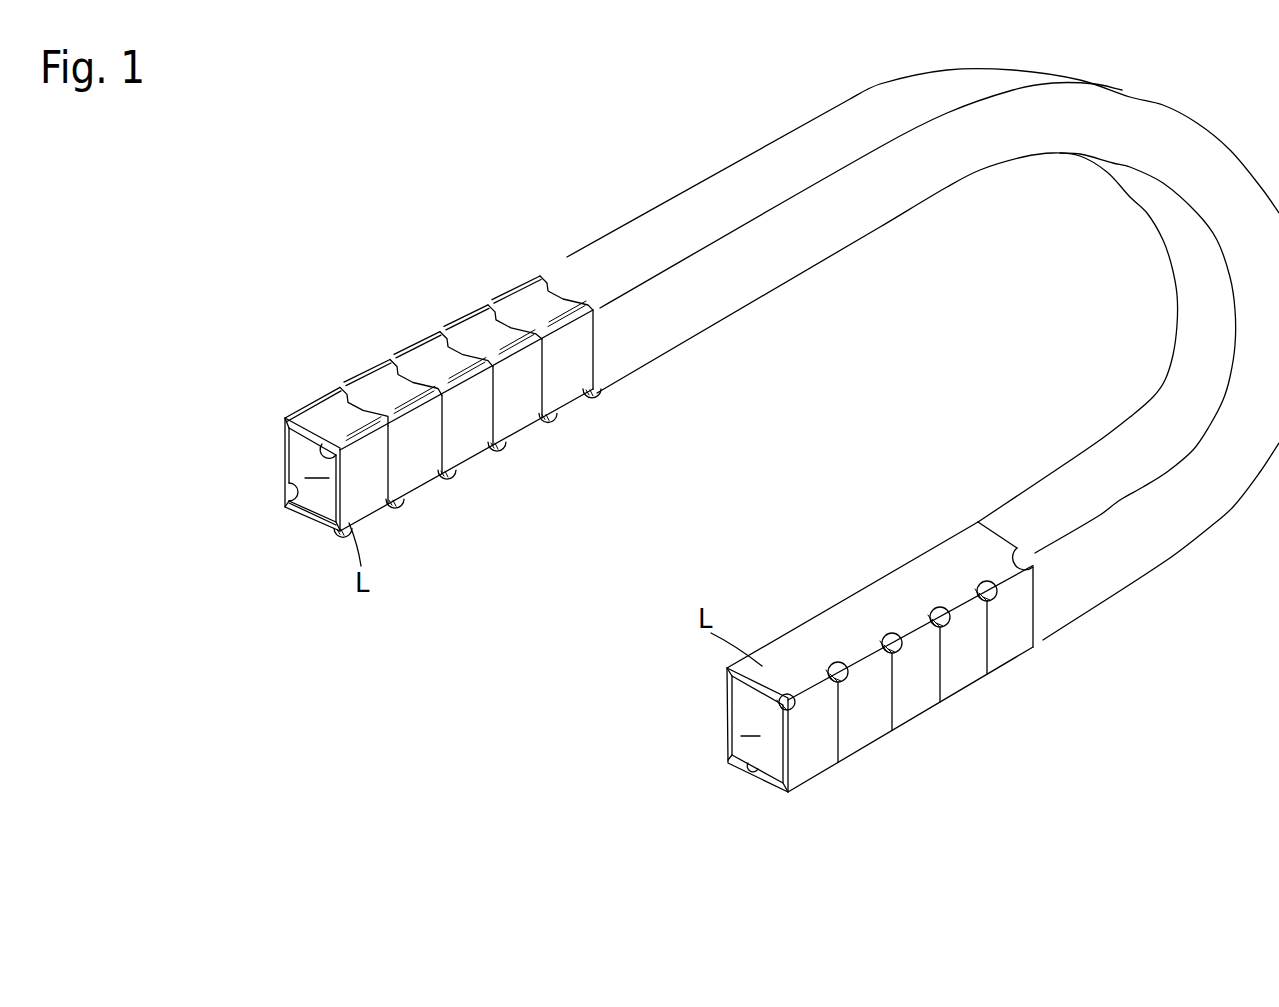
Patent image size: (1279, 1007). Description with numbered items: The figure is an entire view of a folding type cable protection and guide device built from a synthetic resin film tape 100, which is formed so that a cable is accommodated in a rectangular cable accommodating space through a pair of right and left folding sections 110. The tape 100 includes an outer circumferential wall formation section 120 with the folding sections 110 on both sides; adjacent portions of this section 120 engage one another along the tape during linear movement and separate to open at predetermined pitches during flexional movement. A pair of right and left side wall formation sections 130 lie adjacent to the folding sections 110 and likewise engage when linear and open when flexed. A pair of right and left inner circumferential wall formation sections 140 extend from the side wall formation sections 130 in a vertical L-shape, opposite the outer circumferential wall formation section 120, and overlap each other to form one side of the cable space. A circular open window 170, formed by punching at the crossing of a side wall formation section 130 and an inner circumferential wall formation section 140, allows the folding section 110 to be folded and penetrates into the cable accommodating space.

The synthetic resin film tape 100 is at (405, 270).
The folding section 110 is at (333, 450).
The outer circumferential wall formation section 120 is at (518, 298).
The side wall formation section 130 is at (565, 396).
The inner circumferential wall formation section 140 is at (325, 533).
The circular open window 170 is at (495, 452).